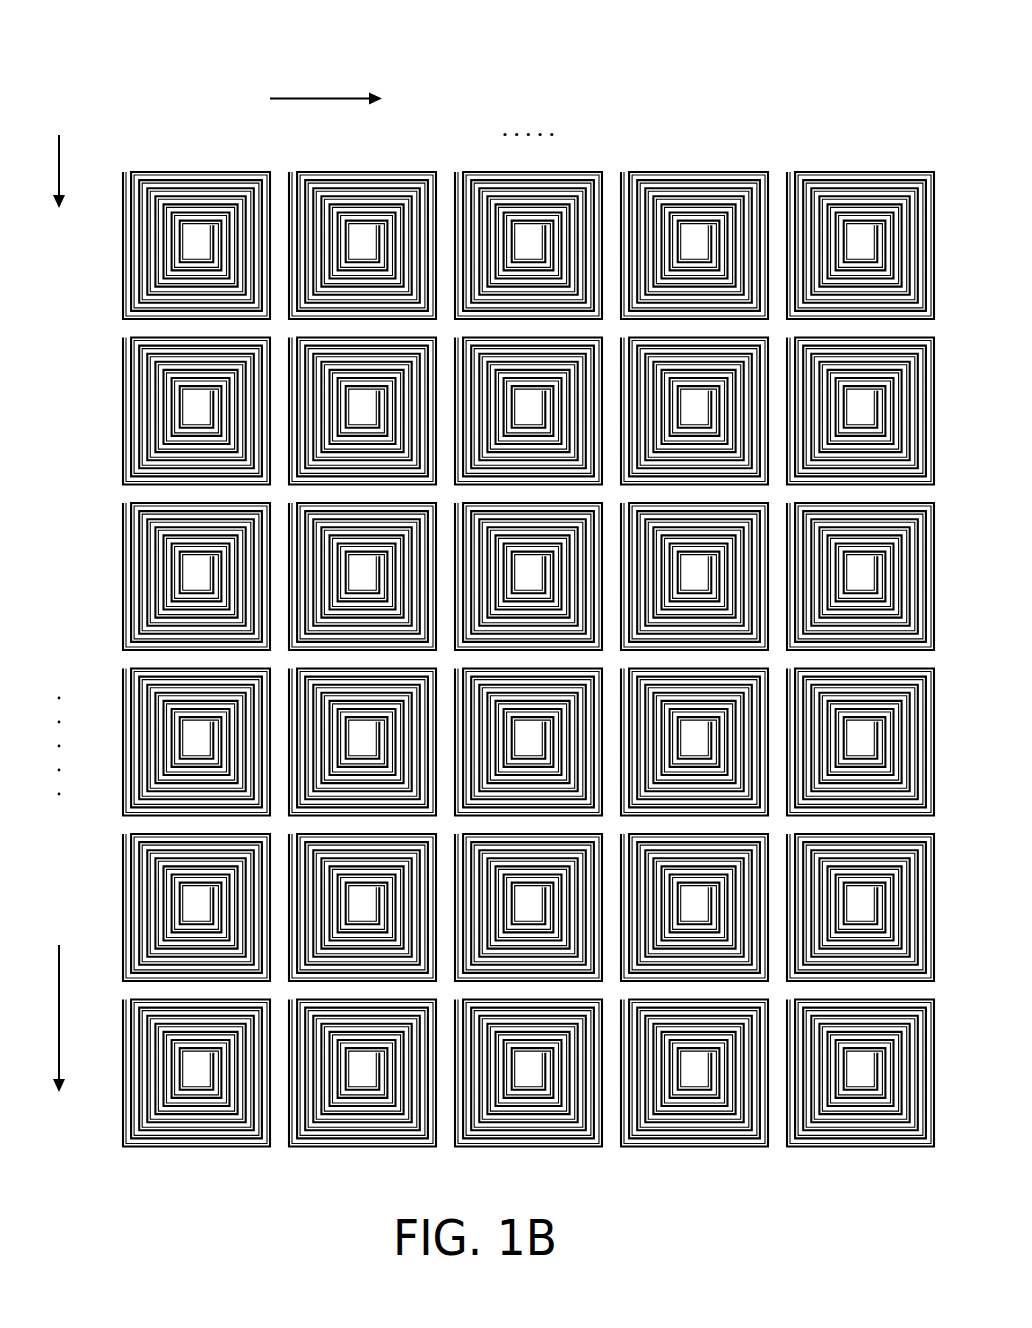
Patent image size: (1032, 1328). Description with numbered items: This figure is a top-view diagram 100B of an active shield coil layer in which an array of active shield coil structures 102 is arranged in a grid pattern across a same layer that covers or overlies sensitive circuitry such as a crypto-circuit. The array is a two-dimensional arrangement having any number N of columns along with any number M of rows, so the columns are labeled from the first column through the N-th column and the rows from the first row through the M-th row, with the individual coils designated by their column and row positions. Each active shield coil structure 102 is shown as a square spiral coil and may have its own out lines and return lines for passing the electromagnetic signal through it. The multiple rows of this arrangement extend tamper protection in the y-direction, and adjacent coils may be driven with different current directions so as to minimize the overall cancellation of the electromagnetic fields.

The top-view diagram 100B is at (92, 16).
The active shield coil structure 102 is at (653, 44).